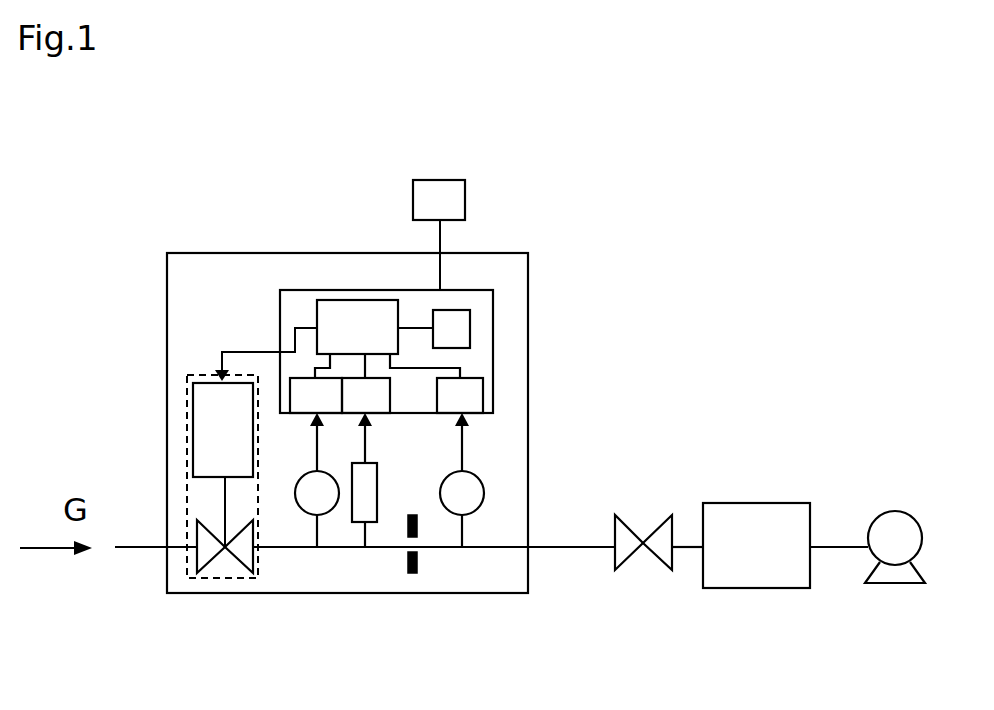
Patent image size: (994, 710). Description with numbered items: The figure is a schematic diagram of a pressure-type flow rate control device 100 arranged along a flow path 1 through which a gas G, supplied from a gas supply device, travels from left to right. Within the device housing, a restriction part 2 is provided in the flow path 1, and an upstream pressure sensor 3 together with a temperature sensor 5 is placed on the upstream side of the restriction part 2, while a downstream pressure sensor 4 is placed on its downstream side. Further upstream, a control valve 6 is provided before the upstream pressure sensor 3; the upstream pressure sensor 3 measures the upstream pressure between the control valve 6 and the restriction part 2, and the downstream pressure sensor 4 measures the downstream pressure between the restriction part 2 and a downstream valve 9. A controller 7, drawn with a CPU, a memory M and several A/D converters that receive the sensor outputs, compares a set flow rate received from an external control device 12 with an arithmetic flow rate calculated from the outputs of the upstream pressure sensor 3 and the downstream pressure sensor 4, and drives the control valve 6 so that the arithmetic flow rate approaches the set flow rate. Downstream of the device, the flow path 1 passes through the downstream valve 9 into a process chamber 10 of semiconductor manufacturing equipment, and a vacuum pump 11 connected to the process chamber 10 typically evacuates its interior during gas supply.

The flow rate control device 100 is at (530, 297).
The flow path 1 is at (497, 560).
The restriction part 2 is at (413, 575).
The upstream pressure sensor 3 is at (303, 512).
The downstream pressure sensor 4 is at (475, 487).
The temperature sensor 5 is at (357, 522).
The control valve 6 is at (192, 472).
The controller 7 is at (493, 348).
The downstream valve 9 is at (645, 538).
The process chamber 10 is at (800, 503).
The vacuum pump 11 is at (902, 588).
The external control device 12 is at (413, 205).